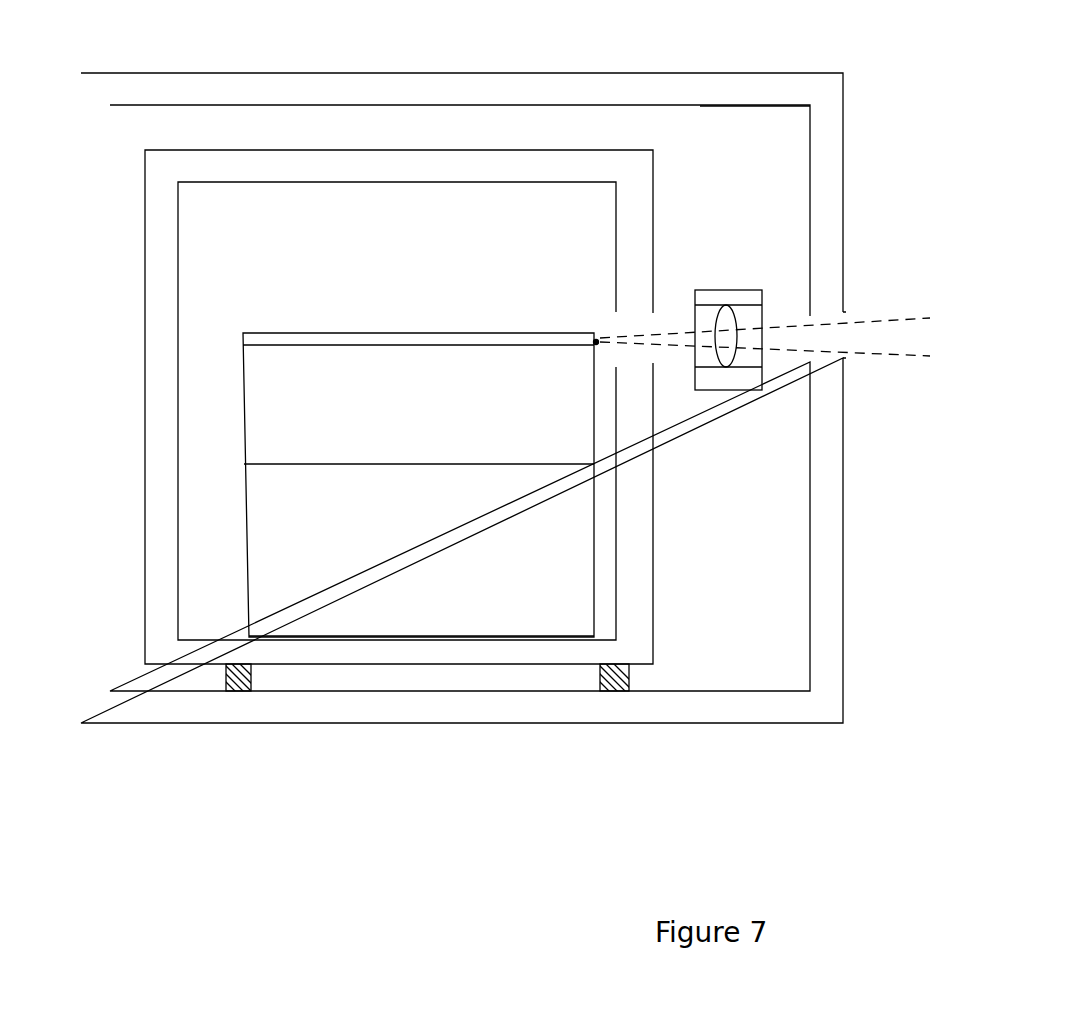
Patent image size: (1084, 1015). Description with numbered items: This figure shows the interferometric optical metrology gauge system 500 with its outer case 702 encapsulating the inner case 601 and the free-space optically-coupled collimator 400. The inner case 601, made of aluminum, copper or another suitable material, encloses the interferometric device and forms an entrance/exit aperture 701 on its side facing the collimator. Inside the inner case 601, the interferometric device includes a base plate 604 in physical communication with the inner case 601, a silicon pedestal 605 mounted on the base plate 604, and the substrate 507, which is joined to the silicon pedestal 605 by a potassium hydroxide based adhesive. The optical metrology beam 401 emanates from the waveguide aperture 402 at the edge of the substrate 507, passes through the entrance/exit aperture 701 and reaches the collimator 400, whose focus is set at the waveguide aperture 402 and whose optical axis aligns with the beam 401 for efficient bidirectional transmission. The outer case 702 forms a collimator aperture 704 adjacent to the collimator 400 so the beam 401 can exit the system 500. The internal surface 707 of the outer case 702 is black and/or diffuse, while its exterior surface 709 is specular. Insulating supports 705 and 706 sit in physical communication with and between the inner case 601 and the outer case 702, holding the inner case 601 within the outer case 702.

The interferometric optical metrology gauge system 500 is at (368, 826).
The exterior surface of outer case 709 is at (456, 68).
The collimator aperture 704 is at (852, 305).
The outer case 702 is at (673, 88).
The internal surface of outer case 707 is at (764, 116).
The inner case 601 is at (640, 197).
The entrance/exit aperture 701 is at (602, 308).
The substrate 507 is at (369, 343).
The silicon pedestal 605 is at (256, 413).
The base plate 604 is at (270, 552).
The waveguide aperture 402 is at (586, 360).
The optical metrology beam 401 is at (893, 370).
The free-space optically-coupled collimator 400 is at (722, 420).
The insulating support 705 is at (252, 677).
The insulating support 706 is at (628, 676).